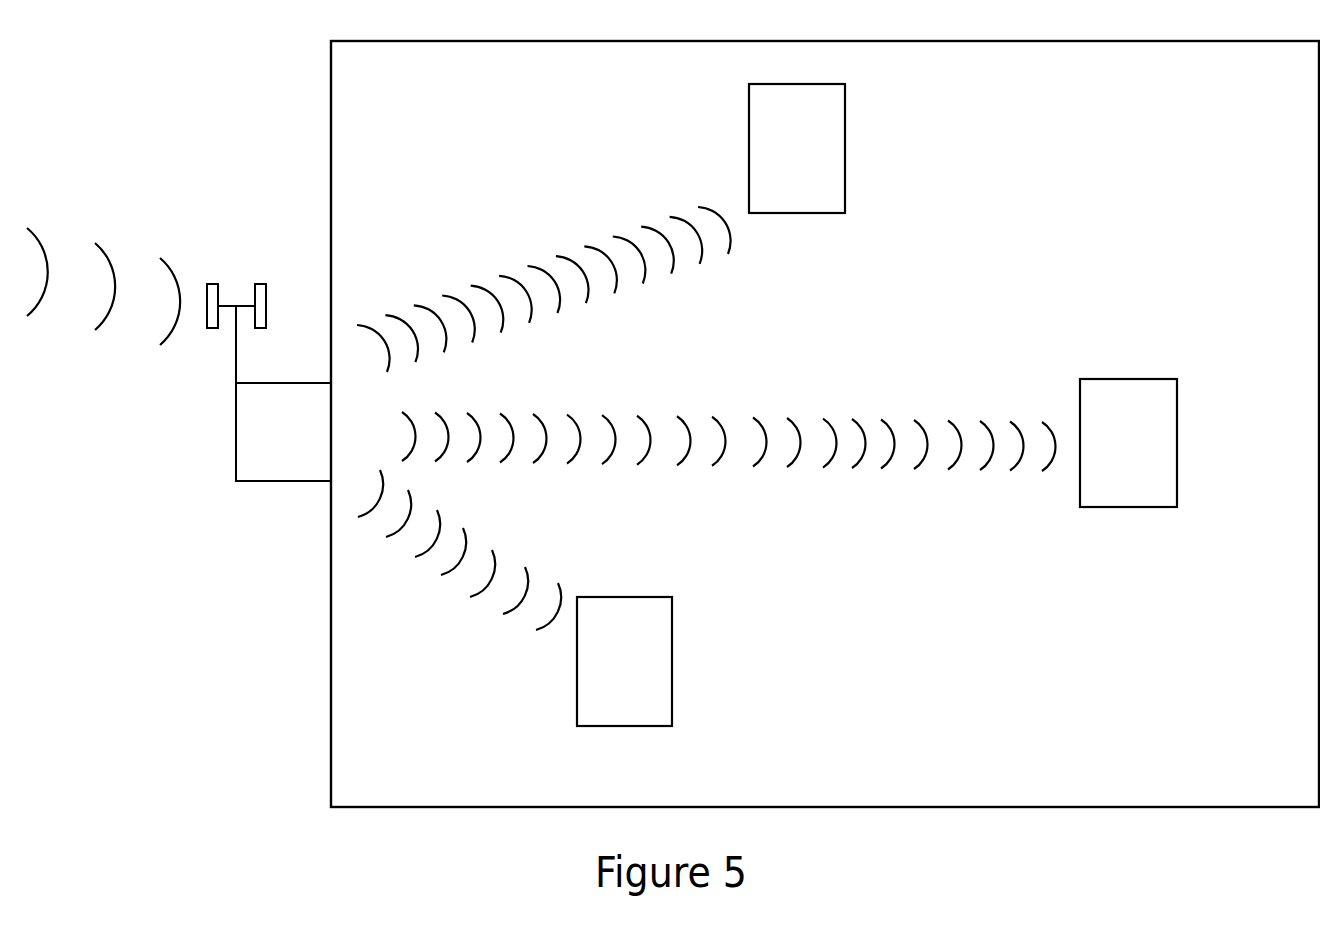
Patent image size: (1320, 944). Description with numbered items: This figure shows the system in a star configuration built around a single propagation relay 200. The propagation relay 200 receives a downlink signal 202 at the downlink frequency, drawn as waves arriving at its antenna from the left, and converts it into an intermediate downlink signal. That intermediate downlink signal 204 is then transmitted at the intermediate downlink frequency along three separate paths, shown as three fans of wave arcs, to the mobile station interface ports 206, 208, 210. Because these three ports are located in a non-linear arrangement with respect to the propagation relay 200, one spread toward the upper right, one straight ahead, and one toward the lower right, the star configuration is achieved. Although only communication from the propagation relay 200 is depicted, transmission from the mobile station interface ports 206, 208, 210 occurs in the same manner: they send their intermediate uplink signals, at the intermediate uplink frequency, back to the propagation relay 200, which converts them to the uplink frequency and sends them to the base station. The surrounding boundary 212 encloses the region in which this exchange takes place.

The propagation relay 200 is at (305, 461).
The downlink signal 202 is at (107, 259).
The intermediate downlink signal 204 is at (508, 262).
The mobile station interface port 206 is at (818, 173).
The mobile station interface port 208 is at (1150, 471).
The mobile station interface port 210 is at (645, 689).
The coverage area boundary 212 is at (331, 95).